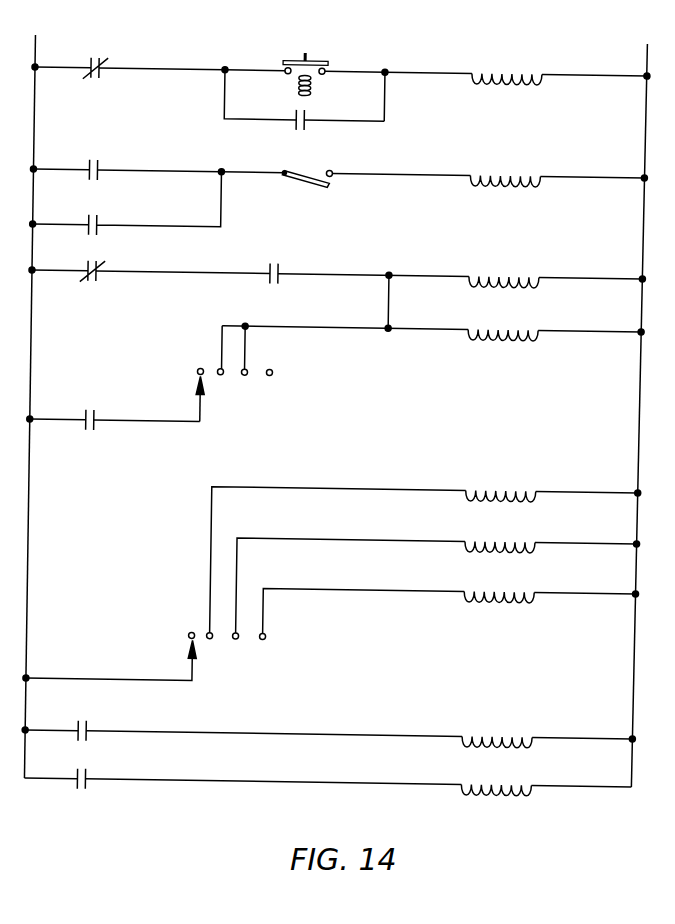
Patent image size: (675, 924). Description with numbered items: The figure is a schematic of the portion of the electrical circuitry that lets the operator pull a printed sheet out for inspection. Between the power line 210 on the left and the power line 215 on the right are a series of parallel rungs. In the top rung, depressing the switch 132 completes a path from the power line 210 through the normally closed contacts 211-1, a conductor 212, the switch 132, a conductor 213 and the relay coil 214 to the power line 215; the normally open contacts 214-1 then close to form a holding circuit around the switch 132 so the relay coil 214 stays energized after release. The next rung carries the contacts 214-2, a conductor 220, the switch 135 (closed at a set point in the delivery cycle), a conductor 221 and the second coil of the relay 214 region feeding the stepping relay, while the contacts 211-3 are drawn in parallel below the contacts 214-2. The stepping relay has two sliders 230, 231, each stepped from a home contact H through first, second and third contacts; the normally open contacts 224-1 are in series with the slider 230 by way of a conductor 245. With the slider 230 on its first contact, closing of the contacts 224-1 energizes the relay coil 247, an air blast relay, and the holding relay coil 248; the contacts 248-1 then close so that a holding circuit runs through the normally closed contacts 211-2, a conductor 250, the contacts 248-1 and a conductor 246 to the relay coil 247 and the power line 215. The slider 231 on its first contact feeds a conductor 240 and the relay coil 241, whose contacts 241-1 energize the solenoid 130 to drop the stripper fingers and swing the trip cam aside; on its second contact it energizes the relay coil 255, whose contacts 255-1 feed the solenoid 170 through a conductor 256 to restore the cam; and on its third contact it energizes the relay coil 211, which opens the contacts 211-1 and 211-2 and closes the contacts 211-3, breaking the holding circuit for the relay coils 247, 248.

The power line 210 is at (36, 52).
The normally closed contacts 211-1 is at (102, 58).
The conductor 212 is at (172, 67).
The switch 132 is at (310, 58).
The conductor 213 is at (404, 67).
The relay coil 214 is at (506, 67).
The power line 215 is at (647, 48).
The normally open contacts 214-1 is at (304, 114).
The normally open contacts 214-2 is at (101, 165).
The conductor 220 is at (243, 169).
The switch 135 is at (312, 168).
The conductor 221 is at (385, 169).
The normally open contacts 211-3 is at (101, 222).
The normally closed contacts 211-2 is at (98, 268).
The conductor 250 is at (175, 270).
The contacts 248-1 is at (285, 268).
The conductor 246 is at (405, 270).
The relay coil 248 is at (515, 270).
The relay coil 247 is at (520, 323).
The normally open contacts 224-1 is at (94, 410).
The conductor 245 is at (102, 428).
The slider 230 is at (205, 412).
The conductor 240 is at (292, 484).
The relay coil 241 is at (512, 484).
The relay coil 255 is at (520, 535).
The relay coil 211 is at (526, 585).
The slider 231 is at (201, 666).
The contacts 241-1 is at (97, 724).
The normally open contacts 255-1 is at (98, 776).
The conductor 256 is at (280, 778).
The solenoid 130 is at (518, 731).
The solenoid 170 is at (520, 779).